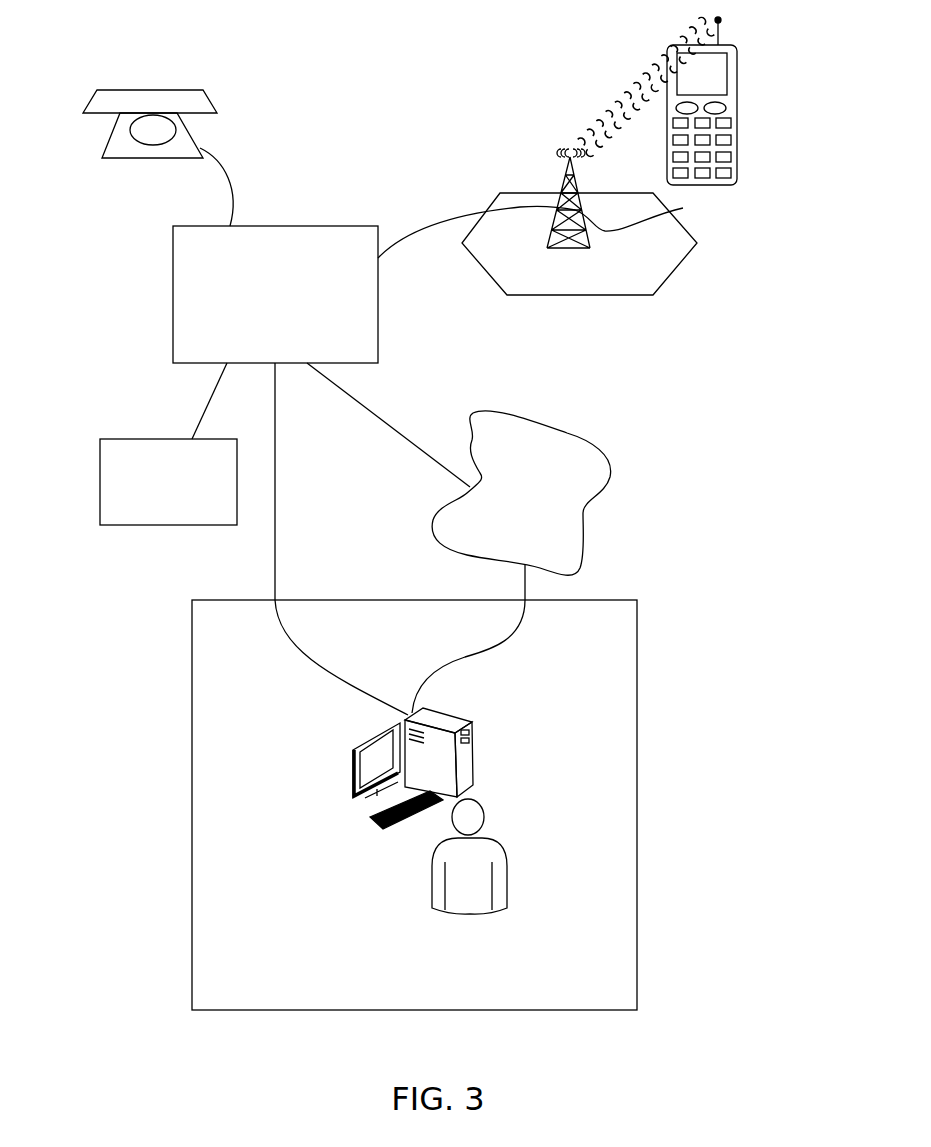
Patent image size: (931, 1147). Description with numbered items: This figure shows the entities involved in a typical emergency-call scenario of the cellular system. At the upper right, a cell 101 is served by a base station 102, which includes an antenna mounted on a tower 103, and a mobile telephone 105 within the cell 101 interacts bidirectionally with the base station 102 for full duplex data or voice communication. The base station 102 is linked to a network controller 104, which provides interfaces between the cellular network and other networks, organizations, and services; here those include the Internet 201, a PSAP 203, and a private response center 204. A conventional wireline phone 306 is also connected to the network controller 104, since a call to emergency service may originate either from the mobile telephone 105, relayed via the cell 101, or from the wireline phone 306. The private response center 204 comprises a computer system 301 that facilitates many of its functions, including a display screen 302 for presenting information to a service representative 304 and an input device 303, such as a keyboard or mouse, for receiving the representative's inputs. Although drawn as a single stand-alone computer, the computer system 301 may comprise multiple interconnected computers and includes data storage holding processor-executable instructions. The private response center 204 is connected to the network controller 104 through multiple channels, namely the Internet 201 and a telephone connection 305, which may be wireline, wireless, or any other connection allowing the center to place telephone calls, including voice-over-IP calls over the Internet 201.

The cell 101 is at (515, 200).
The base station 102 is at (551, 228).
The tower 103 is at (563, 175).
The network controller 104 is at (173, 287).
The mobile telephone 105 is at (737, 70).
The Internet 201 is at (578, 438).
The PSAP 203 is at (125, 439).
The private response center 204 is at (212, 600).
The computer system 301 is at (473, 732).
The display screen 302 is at (360, 762).
The input device 303 is at (378, 826).
The service representative 304 is at (509, 866).
The telephone connection 305 is at (277, 460).
The conventional wireline phone 306 is at (102, 158).